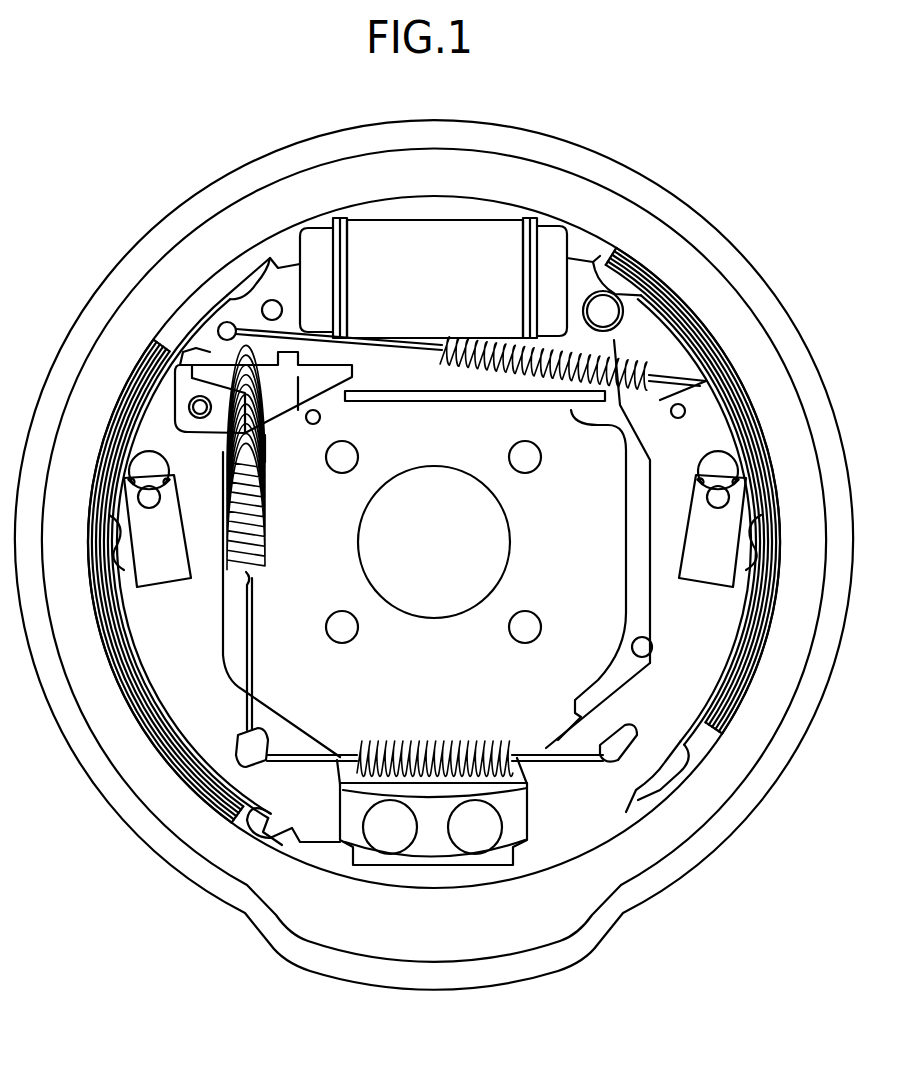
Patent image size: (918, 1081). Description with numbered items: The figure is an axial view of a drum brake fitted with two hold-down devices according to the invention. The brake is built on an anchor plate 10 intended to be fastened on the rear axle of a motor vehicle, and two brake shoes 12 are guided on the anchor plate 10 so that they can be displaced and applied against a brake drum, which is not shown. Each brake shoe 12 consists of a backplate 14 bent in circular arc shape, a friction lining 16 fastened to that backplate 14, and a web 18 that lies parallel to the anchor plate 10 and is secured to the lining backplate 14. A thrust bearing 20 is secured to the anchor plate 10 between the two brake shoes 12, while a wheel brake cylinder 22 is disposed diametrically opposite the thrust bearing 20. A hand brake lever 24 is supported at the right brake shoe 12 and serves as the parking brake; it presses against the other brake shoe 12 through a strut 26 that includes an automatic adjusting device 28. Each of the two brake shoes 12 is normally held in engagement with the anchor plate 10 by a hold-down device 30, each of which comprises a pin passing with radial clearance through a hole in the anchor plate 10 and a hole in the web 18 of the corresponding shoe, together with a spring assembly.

The anchor plate 10 is at (684, 896).
The brake shoes 12 is at (167, 765).
The backplate 14 is at (158, 720).
The friction lining 16 is at (129, 691).
The web 18 is at (293, 747).
The thrust bearing 20 is at (432, 848).
The wheel brake cylinder 22 is at (462, 245).
The hand brake lever 24 is at (636, 487).
The strut 26 is at (463, 390).
The automatic adjusting device 28 is at (288, 420).
The hold-down device 30 is at (149, 480).